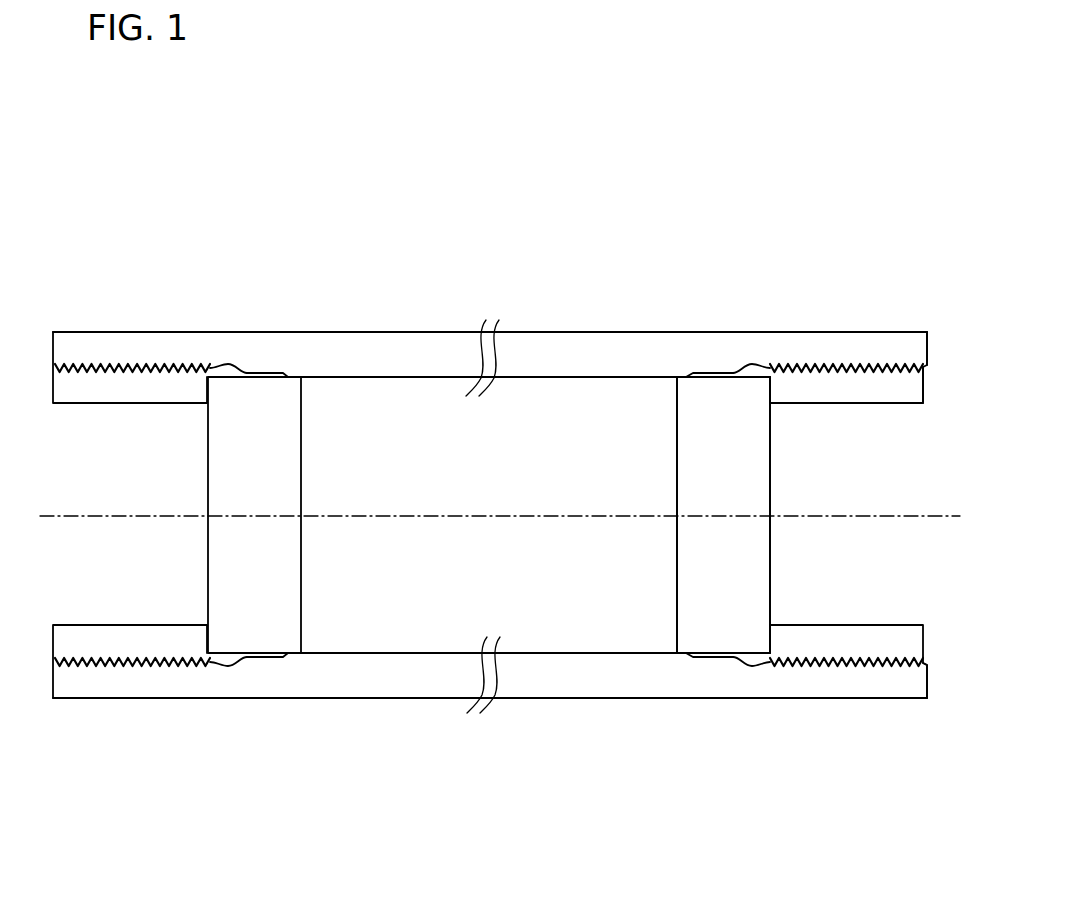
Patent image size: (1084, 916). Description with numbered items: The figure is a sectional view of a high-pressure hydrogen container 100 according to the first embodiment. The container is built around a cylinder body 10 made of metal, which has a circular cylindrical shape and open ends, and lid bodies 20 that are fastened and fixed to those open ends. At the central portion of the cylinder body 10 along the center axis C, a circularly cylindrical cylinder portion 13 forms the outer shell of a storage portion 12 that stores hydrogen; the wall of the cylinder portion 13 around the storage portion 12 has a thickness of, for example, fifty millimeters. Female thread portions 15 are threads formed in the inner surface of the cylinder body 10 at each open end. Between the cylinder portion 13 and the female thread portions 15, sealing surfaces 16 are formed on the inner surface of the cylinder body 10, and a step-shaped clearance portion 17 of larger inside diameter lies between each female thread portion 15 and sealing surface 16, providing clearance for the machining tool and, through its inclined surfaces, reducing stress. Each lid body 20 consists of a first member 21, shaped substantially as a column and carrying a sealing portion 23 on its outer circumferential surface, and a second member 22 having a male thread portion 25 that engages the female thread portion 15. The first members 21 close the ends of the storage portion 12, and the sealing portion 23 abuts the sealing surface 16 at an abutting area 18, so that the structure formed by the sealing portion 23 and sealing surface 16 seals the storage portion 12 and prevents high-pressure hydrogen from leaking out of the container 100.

The high-pressure hydrogen container 100 is at (535, 278).
The cylinder body 10 is at (348, 362).
The storage portion 12 is at (560, 405).
The cylinder portion 13 is at (448, 352).
The female thread portion 15 is at (803, 668).
The sealing surface 16 is at (297, 382).
The clearance portion 17 is at (229, 372).
The abutting area 18 is at (677, 382).
The lid body 20 is at (140, 392).
The first member 21 is at (714, 405).
The second member 22 is at (887, 393).
The sealing portion 23 is at (296, 380).
The male thread portion 25 is at (843, 658).
The center axis C is at (555, 516).